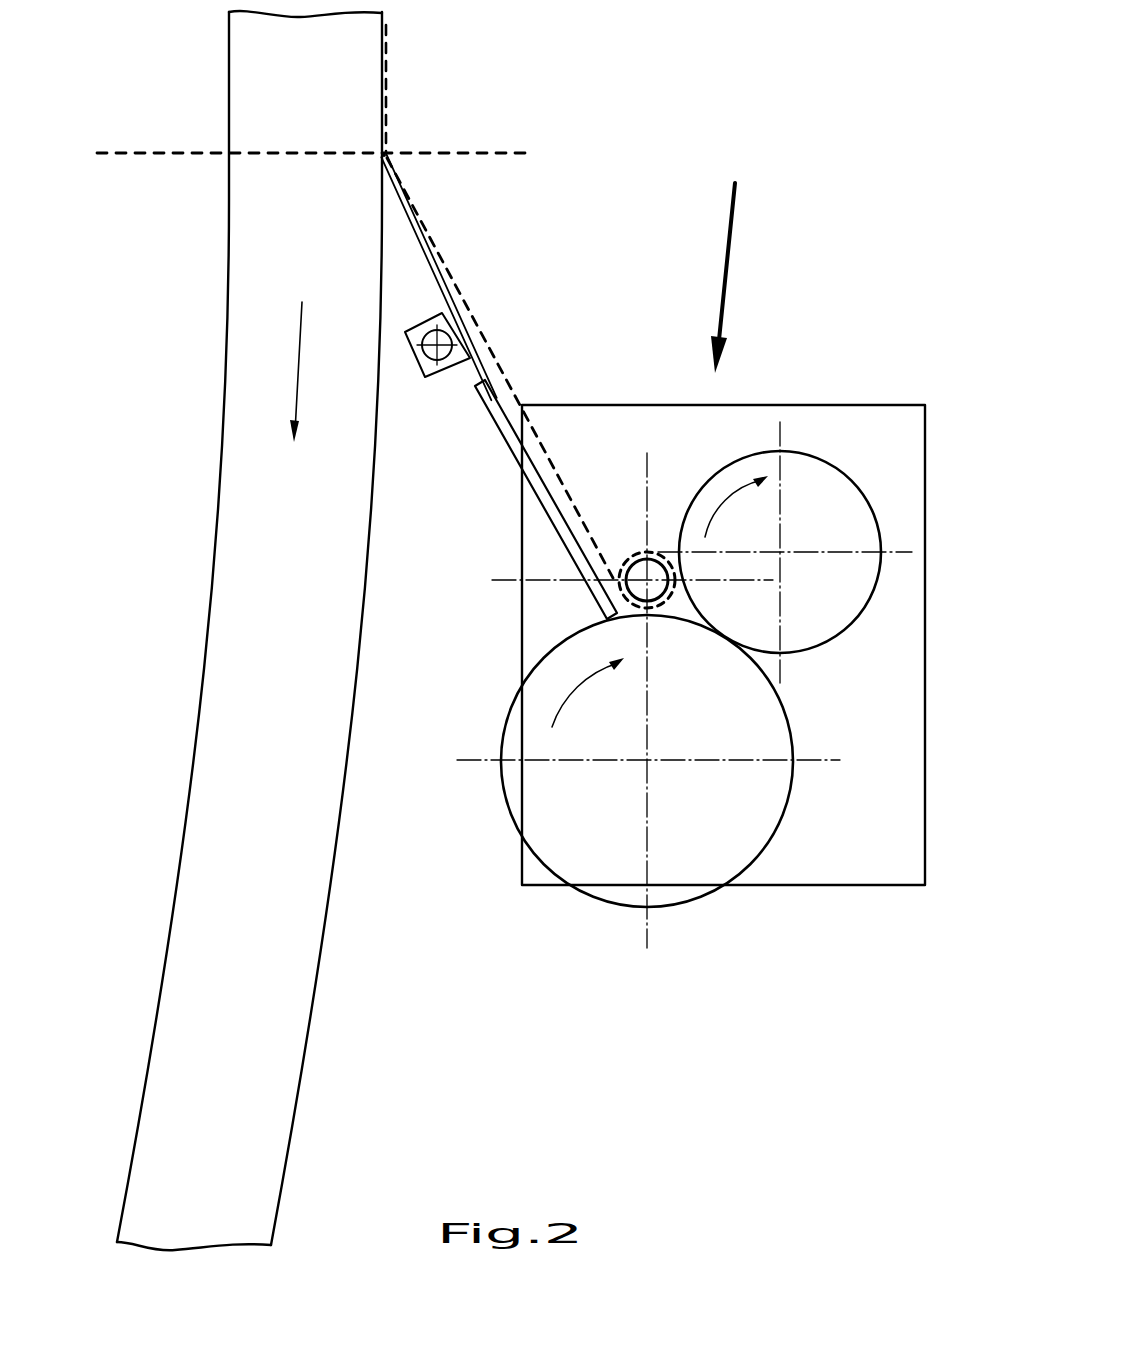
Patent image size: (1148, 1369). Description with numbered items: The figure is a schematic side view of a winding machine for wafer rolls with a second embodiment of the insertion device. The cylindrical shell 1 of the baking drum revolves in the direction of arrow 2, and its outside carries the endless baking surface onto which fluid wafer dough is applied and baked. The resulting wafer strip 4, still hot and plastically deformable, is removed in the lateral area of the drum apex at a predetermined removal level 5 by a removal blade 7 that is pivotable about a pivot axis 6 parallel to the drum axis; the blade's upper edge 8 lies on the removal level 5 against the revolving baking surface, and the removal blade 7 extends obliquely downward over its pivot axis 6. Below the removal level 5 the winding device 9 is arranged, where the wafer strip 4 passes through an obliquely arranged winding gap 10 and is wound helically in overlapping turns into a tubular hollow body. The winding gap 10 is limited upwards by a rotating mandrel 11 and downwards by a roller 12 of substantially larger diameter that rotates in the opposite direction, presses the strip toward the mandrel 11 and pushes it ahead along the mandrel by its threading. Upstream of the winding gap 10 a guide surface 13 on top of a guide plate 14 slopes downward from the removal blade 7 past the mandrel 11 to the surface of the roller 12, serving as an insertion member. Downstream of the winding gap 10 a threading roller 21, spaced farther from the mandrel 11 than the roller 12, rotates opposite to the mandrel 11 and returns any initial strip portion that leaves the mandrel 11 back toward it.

The cylindrical shell 1 is at (242, 53).
The arrow (running direction) 2 is at (297, 369).
The wafer strip 4 is at (387, 49).
The removal level 5 is at (143, 152).
The pivot axis 6 is at (427, 355).
The removal blade 7 is at (420, 250).
The upper edge 8 is at (385, 152).
The winding device 9 is at (724, 256).
The winding gap 10 is at (690, 600).
The mandrel 11 is at (640, 575).
The roller 12 is at (530, 810).
The guide surface 13 is at (540, 480).
The guide plate 14 is at (488, 413).
The threading roller 21 is at (837, 488).